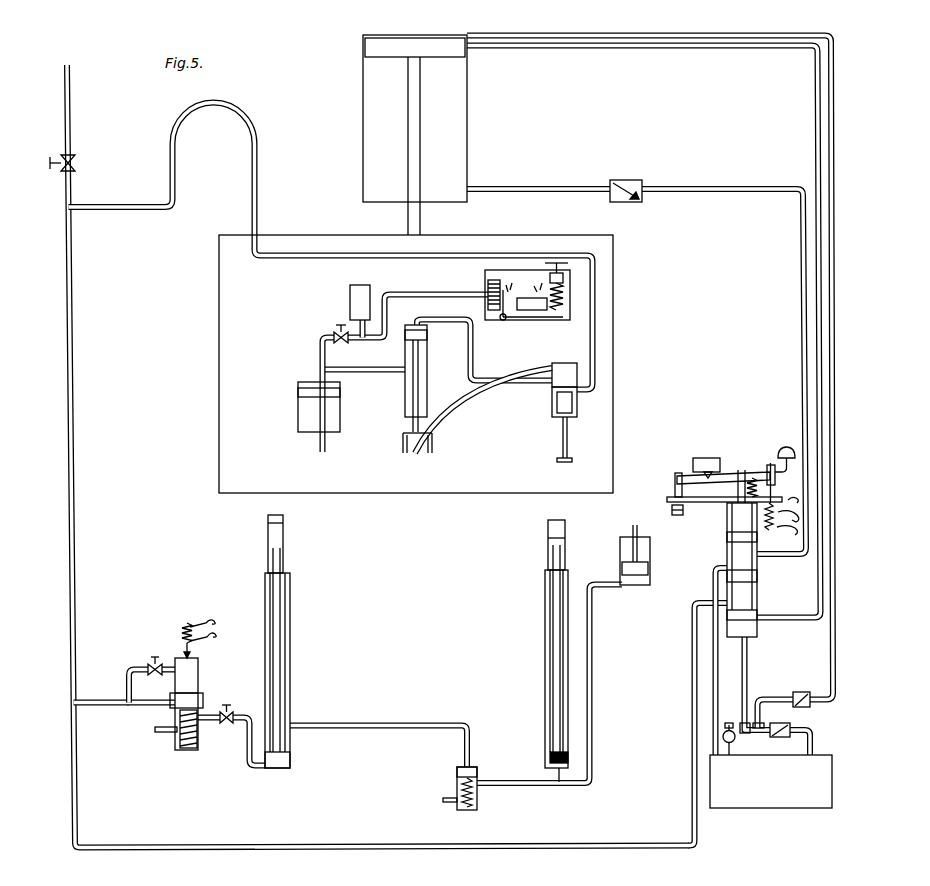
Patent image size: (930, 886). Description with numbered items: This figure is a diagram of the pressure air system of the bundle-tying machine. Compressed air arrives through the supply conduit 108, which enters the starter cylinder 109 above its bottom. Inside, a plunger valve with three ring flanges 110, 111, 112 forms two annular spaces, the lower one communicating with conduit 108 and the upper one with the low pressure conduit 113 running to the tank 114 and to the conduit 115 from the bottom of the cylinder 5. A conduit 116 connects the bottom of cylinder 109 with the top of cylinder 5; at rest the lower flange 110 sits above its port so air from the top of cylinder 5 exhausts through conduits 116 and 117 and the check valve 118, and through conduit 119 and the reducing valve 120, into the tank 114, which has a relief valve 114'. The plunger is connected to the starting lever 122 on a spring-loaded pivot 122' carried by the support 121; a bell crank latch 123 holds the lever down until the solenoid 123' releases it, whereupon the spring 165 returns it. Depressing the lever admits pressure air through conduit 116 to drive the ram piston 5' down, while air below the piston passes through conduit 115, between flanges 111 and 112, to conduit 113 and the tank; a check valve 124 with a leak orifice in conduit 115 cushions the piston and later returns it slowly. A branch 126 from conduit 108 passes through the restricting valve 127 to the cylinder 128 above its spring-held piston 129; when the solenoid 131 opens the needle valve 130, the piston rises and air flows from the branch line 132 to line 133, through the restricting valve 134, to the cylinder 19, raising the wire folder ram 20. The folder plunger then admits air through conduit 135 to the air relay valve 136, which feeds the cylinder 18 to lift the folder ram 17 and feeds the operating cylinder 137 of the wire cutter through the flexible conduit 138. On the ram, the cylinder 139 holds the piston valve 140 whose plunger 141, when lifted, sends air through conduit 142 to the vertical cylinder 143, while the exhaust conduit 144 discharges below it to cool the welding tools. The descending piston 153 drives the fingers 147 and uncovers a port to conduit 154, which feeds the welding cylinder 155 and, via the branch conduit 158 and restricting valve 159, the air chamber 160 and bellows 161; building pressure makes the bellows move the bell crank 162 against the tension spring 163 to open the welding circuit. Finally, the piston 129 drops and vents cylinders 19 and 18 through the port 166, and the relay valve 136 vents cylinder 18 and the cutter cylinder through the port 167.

The cylinder 5 is at (435, 135).
The ram piston 5' is at (437, 63).
The folder ram 17 is at (548, 546).
The cylinder 18 is at (545, 634).
The cylinder 19 is at (290, 652).
The wire folder ram 20 is at (282, 611).
The conduit 108 is at (316, 236).
The starter cylinder 109 is at (727, 549).
The ring flange 110 is at (735, 613).
The ring flange 111 is at (757, 576).
The ring flange 112 is at (727, 537).
The low pressure conduit 113 is at (713, 668).
The tank 114 is at (771, 797).
The relief valve 114' is at (696, 739).
The conduit 115 is at (566, 187).
The conduit 116 is at (808, 620).
The conduit 117 is at (748, 653).
The check valve 118 is at (786, 721).
The conduit 119 is at (831, 647).
The reducing valve 120 is at (797, 692).
The support 121 is at (670, 502).
The starting lever 122 is at (661, 485).
The spring-loaded pivot 122' is at (710, 460).
The latch 123 is at (777, 463).
The solenoid 123' is at (783, 525).
The check valve 124 is at (640, 181).
The branch 126 is at (97, 699).
The restricting valve 127 is at (150, 664).
The cylinder 128 is at (198, 673).
The piston 129 is at (198, 697).
The needle valve 130 is at (190, 646).
The solenoid 131 is at (182, 628).
The branch line 132 is at (145, 705).
The branch line 133 is at (209, 723).
The restricting valve 134 is at (230, 723).
The conduit 135 is at (392, 720).
The air relay valve 136 is at (457, 784).
The operating cylinder 137 is at (620, 548).
The flexible conduit 138 is at (593, 721).
The cylinder 139 is at (552, 400).
The piston valve 140 is at (567, 403).
The plunger 141 is at (562, 438).
The conduit 142 is at (474, 359).
The vertical cylinder 143 is at (427, 378).
The exhaust conduit 144 is at (456, 404).
The fingers 147 is at (405, 453).
The piston 153 is at (428, 339).
The conduit 154 is at (378, 373).
The cylinder 155 is at (298, 420).
The branch conduit 158 is at (319, 354).
The restricting valve 159 is at (337, 334).
The air chamber 160 is at (350, 292).
The bellows 161 is at (488, 283).
The bell crank 162 is at (527, 312).
The tension spring 163 is at (566, 296).
The spring 165 is at (749, 478).
The port 166 is at (166, 733).
The port 167 is at (445, 804).